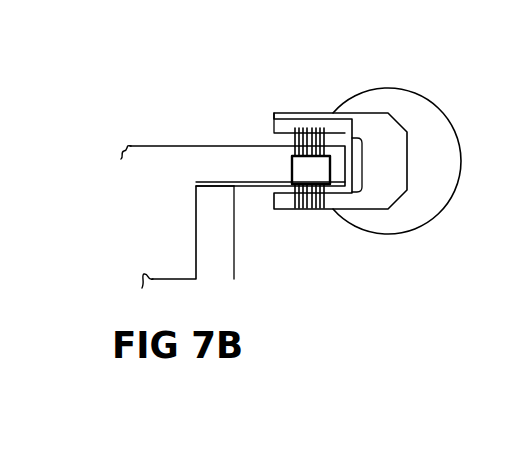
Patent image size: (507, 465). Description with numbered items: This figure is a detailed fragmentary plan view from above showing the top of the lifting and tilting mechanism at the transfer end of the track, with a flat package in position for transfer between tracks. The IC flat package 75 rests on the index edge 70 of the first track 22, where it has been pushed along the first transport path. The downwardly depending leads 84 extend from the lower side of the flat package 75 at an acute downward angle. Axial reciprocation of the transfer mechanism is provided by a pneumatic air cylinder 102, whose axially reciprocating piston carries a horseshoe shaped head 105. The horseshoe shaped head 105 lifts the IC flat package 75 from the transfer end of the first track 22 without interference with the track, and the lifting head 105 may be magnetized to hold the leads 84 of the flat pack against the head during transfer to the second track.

The first track 22 is at (210, 146).
The index edge 70 is at (248, 188).
The IC flat package 75 is at (300, 167).
The downwardly depending leads 84 is at (325, 206).
The pneumatic air cylinder 102 is at (452, 140).
The horseshoe shaped head 105 is at (371, 119).